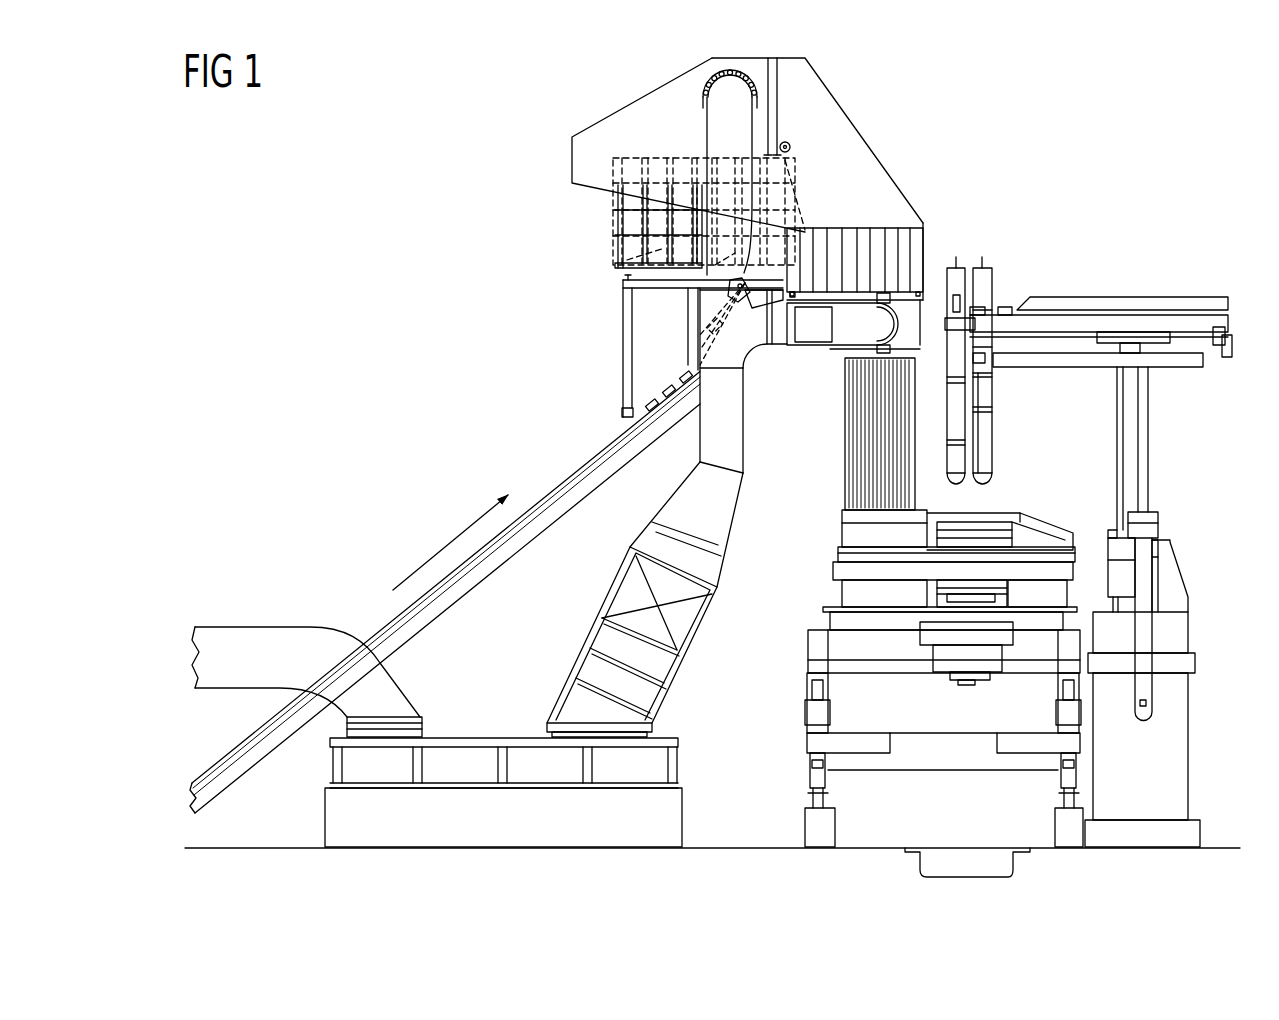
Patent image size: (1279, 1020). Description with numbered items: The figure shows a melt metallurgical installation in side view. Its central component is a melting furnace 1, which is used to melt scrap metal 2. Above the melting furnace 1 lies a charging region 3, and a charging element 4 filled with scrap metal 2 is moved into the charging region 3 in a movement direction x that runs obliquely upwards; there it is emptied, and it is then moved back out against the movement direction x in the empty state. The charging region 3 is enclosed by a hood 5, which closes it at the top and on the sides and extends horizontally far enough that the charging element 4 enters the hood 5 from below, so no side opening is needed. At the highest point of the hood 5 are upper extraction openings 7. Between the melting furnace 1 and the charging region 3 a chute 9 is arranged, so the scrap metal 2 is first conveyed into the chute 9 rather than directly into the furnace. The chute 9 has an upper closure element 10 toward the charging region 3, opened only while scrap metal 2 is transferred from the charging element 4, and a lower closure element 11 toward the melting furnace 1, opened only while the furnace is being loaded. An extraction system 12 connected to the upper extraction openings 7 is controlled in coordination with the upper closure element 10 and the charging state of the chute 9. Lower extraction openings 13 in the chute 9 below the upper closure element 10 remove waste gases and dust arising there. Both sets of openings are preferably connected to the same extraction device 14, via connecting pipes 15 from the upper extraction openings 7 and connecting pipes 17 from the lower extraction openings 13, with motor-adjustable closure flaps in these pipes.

The melting furnace 1 is at (1050, 498).
The scrap metal 2 is at (858, 467).
The charging region 3 is at (865, 155).
The charging element 4 is at (615, 222).
The hood 5 is at (832, 92).
The upper extraction openings 7 is at (704, 90).
The chute 9 is at (846, 418).
The upper closure element 10 is at (862, 293).
The lower closure element 11 is at (855, 530).
The extraction system 12 is at (562, 423).
The lower extraction openings 13 is at (917, 320).
The extraction device 14 is at (486, 744).
The connecting pipes 15 is at (716, 137).
The connecting pipes 17 is at (848, 330).
The movement direction X is at (450, 540).